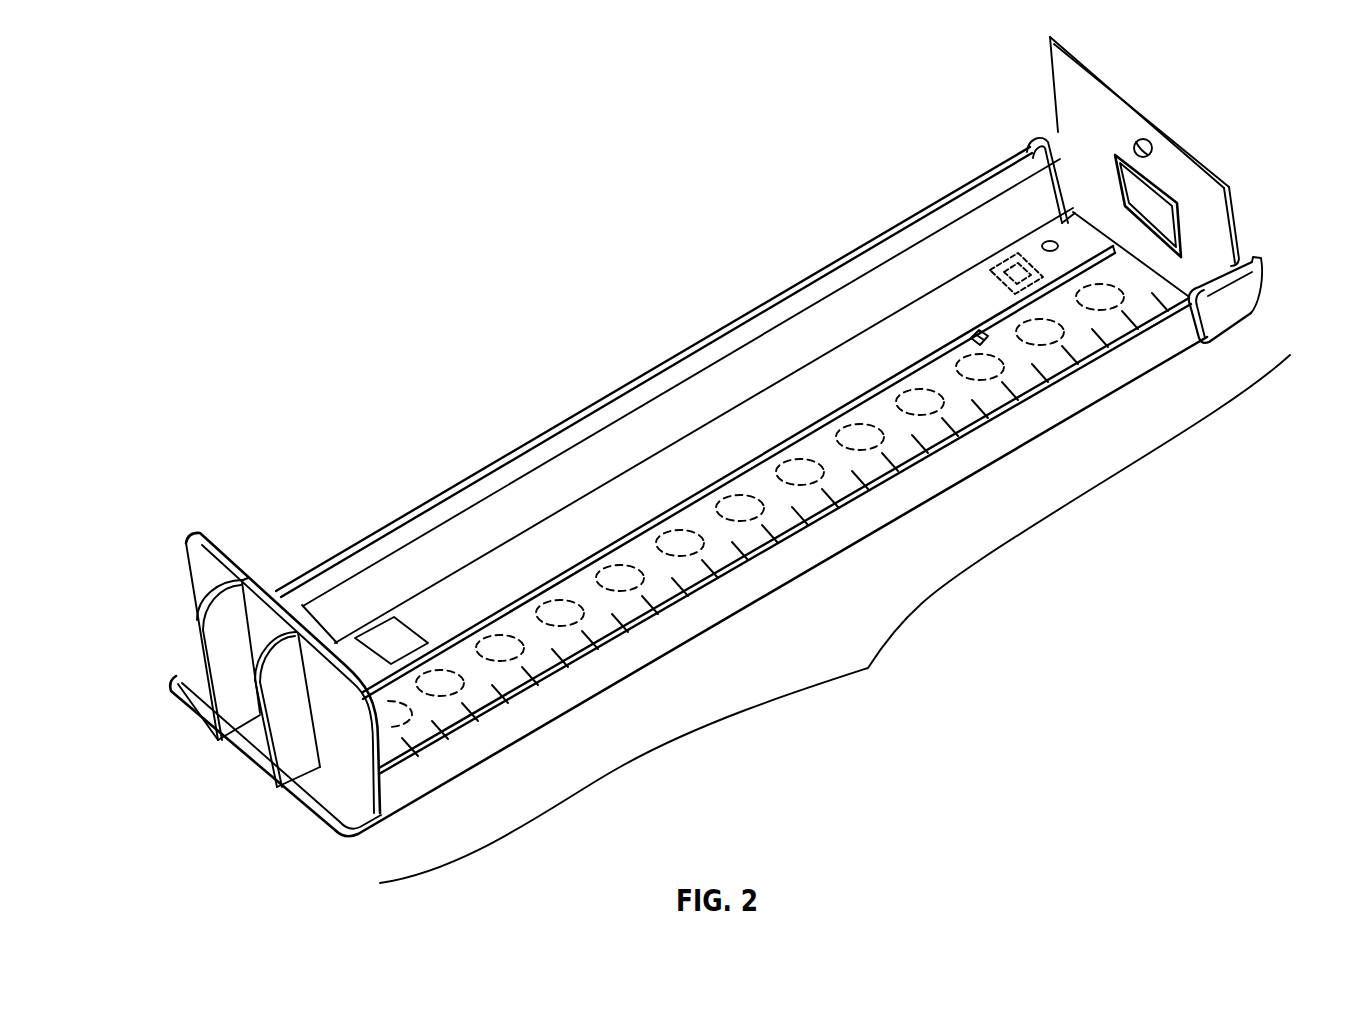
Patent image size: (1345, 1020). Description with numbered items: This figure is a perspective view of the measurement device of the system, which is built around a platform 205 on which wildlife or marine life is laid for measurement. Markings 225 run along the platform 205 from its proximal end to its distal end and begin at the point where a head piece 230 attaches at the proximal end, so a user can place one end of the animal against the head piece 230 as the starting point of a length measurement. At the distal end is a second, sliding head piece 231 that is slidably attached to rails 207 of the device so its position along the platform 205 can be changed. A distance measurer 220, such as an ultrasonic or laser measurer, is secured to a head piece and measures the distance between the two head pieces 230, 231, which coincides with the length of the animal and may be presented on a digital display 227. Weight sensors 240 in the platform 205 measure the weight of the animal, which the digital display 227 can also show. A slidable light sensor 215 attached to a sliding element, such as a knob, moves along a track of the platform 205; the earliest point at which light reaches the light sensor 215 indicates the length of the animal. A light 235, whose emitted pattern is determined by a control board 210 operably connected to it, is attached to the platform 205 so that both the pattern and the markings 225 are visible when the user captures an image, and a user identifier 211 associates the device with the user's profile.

The platform 205 is at (583, 523).
The rails 207 is at (700, 339).
The control board 210 is at (1007, 257).
The user identifier 211 is at (383, 635).
The light sensor 215 is at (985, 338).
The distance measurer 220 is at (1141, 147).
The markings 225 is at (730, 590).
The digital display 227 is at (1183, 233).
The head piece 230 is at (198, 568).
The sliding head piece 231 is at (1058, 55).
The light 235 is at (1050, 240).
The weight sensor 240 is at (983, 368).